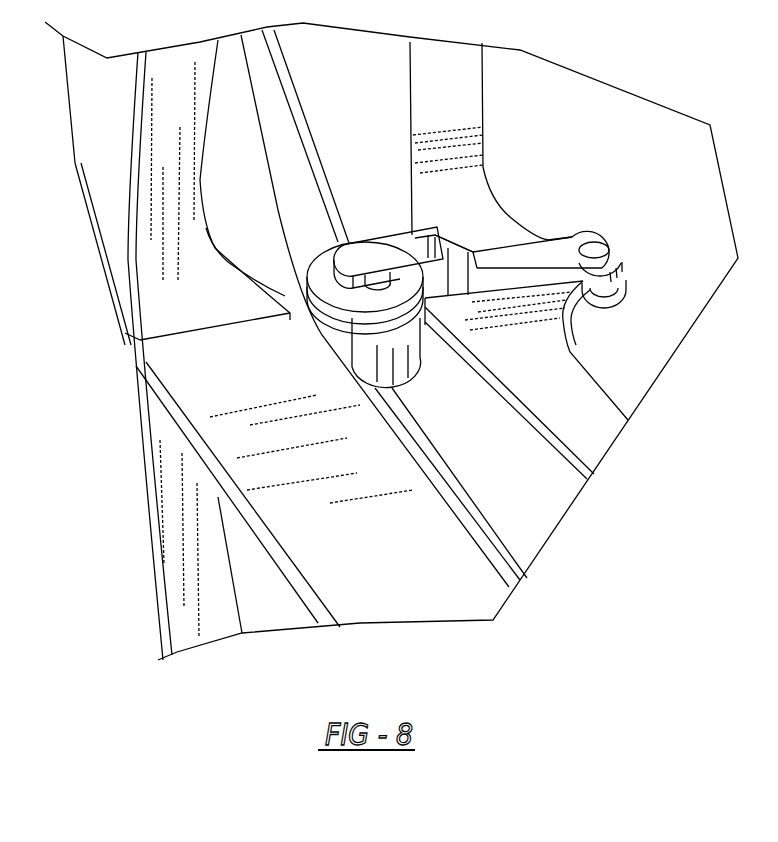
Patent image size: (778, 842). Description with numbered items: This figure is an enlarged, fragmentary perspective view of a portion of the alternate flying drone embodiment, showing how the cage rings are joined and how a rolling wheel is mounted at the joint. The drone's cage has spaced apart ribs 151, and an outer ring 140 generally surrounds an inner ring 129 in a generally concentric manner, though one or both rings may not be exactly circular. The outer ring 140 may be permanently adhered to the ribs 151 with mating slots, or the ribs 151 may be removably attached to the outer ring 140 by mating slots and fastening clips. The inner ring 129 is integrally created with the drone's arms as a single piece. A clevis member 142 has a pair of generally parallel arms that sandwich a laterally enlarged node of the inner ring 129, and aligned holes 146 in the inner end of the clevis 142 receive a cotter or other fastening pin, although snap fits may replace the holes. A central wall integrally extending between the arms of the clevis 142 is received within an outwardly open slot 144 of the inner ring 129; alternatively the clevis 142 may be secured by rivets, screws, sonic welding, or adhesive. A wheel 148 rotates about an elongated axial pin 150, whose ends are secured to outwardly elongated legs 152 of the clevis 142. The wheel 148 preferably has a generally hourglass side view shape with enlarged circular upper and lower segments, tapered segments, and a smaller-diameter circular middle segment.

The inner ring 129 is at (487, 110).
The outer ring 140 is at (75, 163).
The clevis member 142 is at (530, 256).
The outwardly open slot 144 is at (440, 247).
The aligned holes 146 is at (606, 247).
The wheel 148 is at (402, 398).
The elongated axial pin 150 is at (357, 283).
The ribs 151 is at (157, 597).
The outwardly elongated legs 152 is at (376, 250).